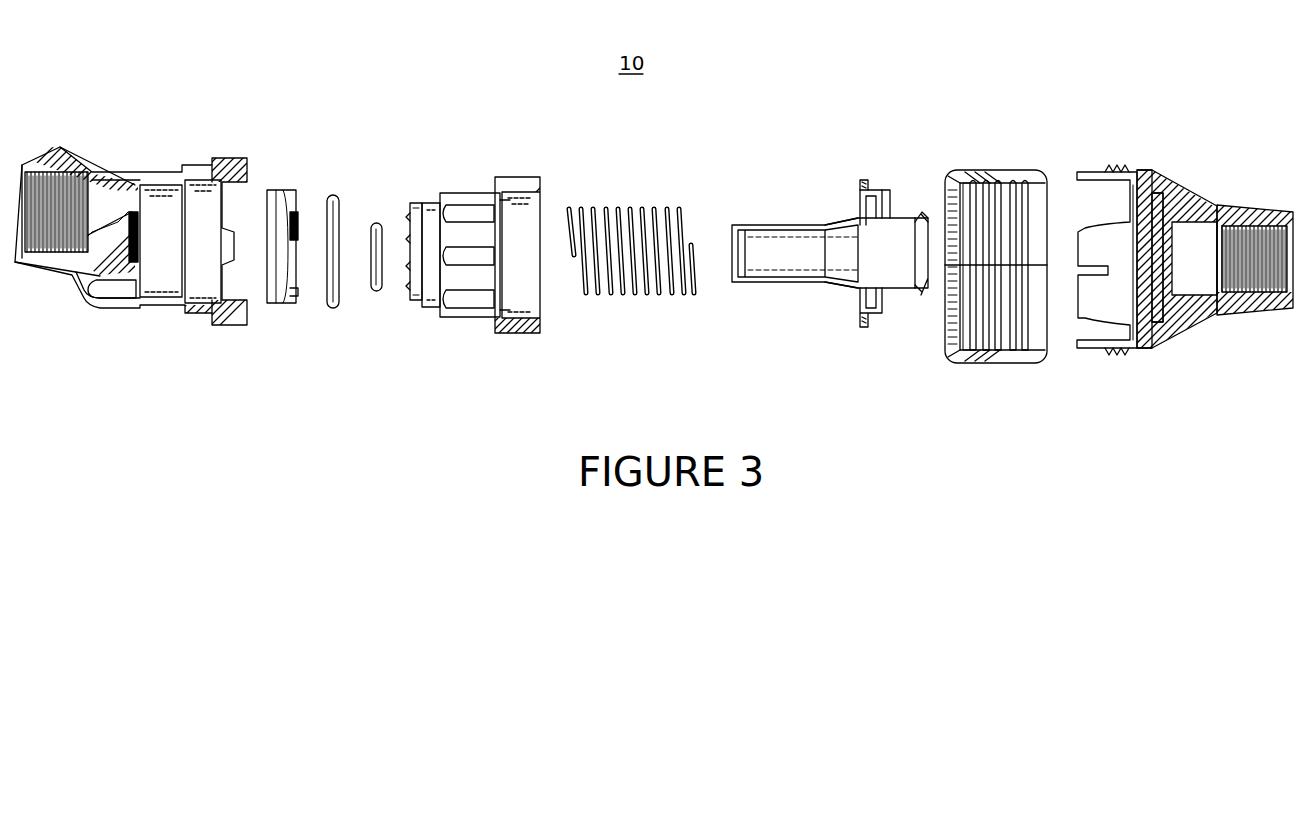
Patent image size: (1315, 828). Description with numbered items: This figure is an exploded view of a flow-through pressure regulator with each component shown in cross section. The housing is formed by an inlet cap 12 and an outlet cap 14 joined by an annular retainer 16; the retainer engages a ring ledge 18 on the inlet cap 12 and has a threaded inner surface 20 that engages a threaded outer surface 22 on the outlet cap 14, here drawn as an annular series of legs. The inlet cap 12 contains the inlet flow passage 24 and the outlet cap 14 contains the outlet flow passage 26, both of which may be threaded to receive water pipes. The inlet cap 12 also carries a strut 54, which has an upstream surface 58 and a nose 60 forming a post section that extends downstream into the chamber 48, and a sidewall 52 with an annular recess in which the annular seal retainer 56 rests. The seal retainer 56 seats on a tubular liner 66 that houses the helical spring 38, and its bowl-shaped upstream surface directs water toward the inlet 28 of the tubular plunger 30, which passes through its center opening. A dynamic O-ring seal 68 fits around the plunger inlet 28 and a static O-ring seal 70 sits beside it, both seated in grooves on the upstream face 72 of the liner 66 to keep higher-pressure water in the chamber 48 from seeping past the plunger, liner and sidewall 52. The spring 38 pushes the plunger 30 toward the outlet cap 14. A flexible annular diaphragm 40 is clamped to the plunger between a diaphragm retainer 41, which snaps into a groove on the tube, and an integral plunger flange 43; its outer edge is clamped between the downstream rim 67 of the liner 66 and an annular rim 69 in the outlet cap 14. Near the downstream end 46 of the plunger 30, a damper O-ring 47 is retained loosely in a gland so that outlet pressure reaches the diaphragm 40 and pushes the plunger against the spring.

The inlet cap 12 is at (168, 147).
The outlet cap 14 is at (1158, 350).
The annular retainer 16 is at (1000, 176).
The ring ledge 18 is at (200, 316).
The threaded inner surface 20 is at (1024, 175).
The threaded outer surface 22 is at (1111, 172).
The inlet flow passage 24 is at (17, 187).
The outlet flow passage 26 is at (1296, 270).
The plunger inlet 28 is at (732, 254).
The tubular plunger 30 is at (826, 225).
The helical spring 38 is at (650, 296).
The diaphragm 40 is at (866, 328).
The diaphragm retainer 41 is at (858, 212).
The plunger flange 43 is at (883, 212).
The downstream end of the plunger 46 is at (921, 292).
The damper O-ring 47 is at (921, 222).
The chamber 48 is at (170, 279).
The sidewall 52 is at (184, 178).
The strut 54 is at (94, 280).
The annular seal retainer 56 is at (282, 304).
The upstream surface 58 is at (110, 222).
The nose 60 is at (133, 222).
The tubular liner 66 is at (432, 318).
The downstream rim 67 is at (538, 334).
The dynamic O-ring seal 68 is at (377, 224).
The annular rim 69 is at (1160, 175).
The static O-ring seal 70 is at (333, 196).
The upstream face 72 is at (410, 262).